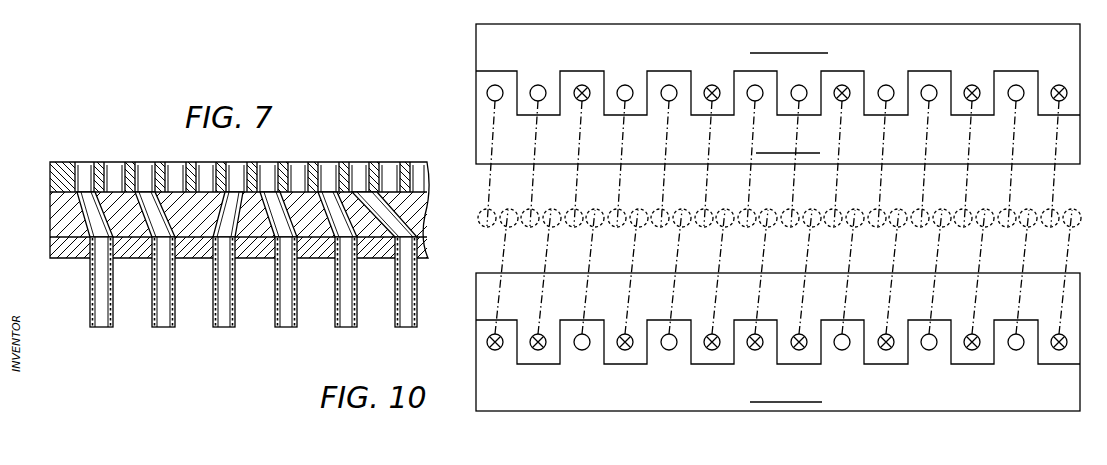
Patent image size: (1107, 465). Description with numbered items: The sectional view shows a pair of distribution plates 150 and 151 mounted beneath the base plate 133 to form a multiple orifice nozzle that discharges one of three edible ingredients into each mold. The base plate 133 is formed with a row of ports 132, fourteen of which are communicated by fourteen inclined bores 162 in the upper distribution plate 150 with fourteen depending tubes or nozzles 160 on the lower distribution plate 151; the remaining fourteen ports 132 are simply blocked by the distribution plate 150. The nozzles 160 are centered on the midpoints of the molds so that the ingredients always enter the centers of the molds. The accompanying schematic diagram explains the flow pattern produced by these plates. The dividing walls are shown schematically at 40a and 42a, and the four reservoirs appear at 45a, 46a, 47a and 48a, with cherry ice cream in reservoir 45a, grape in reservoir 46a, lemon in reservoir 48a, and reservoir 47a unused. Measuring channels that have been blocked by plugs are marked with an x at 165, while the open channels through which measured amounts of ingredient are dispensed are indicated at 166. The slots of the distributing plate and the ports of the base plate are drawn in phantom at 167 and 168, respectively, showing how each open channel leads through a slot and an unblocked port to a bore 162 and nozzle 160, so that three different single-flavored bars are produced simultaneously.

In FIG. 7, the distribution plate 150 is at (50, 204).
In FIG. 7, the base plate 133 is at (68, 162).
In FIG. 7, the ports 132 is at (172, 176).
In FIG. 7, the inclined bores 162 is at (228, 206).
In FIG. 7, the distribution plate 151 is at (70, 258).
In FIG. 7, the nozzles 160 is at (285, 328).
In FIG. 10, the dividing wall 40a is at (1016, 71).
In FIG. 10, the dividing wall 42a is at (1059, 365).
In FIG. 10, the reservoir 45a is at (555, 56).
In FIG. 10, the reservoir 46a is at (535, 151).
In FIG. 10, the reservoir 47a is at (540, 308).
In FIG. 10, the reservoir 48a is at (556, 403).
In FIG. 10, the blocked measuring channels 165 is at (708, 86).
In FIG. 10, the open measuring channels 166 is at (926, 86).
In FIG. 10, the slots 167 is at (651, 193).
In FIG. 10, the ports 168 is at (733, 190).